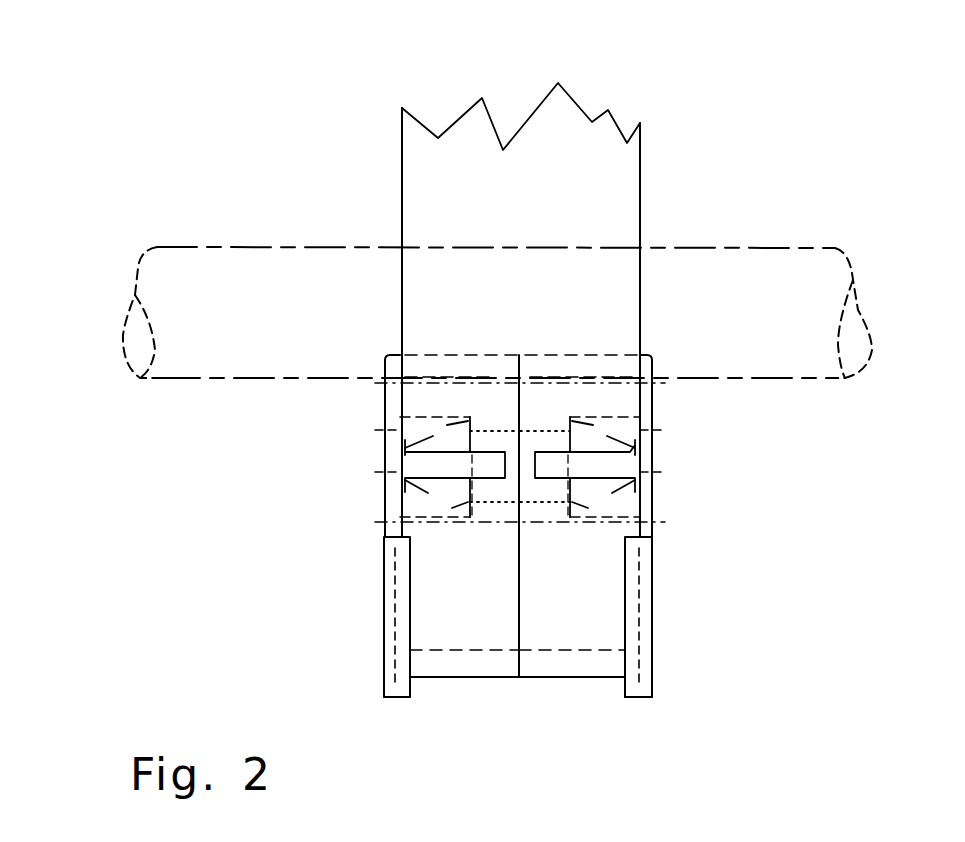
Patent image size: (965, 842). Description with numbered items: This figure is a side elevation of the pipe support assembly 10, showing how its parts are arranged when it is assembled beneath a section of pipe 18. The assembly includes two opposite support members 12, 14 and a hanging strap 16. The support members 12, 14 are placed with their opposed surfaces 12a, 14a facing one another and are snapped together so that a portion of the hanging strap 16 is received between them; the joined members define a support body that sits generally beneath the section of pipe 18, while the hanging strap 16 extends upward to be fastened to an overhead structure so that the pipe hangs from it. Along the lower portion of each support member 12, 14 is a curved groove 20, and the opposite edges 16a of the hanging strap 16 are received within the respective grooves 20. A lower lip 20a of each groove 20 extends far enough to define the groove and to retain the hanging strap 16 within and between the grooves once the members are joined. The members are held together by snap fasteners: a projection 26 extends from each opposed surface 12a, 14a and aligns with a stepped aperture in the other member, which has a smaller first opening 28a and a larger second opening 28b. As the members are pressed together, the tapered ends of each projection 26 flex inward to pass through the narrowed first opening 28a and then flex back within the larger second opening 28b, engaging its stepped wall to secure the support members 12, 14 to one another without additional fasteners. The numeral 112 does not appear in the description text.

The pipe support assembly 10 is at (343, 172).
The support member 12 is at (461, 628).
The opposed surface 12a is at (521, 556).
The support member 14 is at (566, 630).
The opposed surface 14a is at (518, 578).
The hanging strap 16 is at (560, 125).
The edges of hanging strap 16a is at (402, 133).
The section of pipe 18 is at (795, 268).
The groove 20 is at (398, 537).
The lower lip 20a is at (403, 700).
The projection 26 is at (445, 443).
The first opening 28a is at (495, 432).
The second opening 28b is at (585, 434).
The clamp mechanism 112 is at (333, 499).